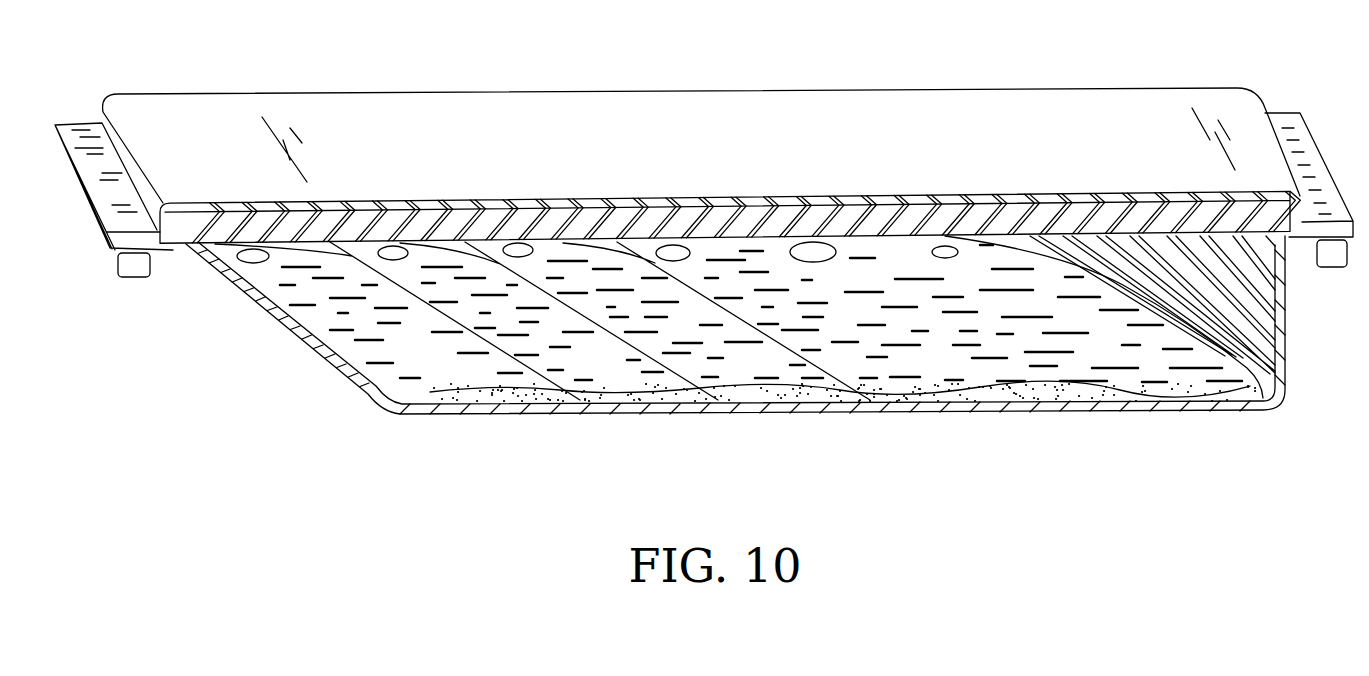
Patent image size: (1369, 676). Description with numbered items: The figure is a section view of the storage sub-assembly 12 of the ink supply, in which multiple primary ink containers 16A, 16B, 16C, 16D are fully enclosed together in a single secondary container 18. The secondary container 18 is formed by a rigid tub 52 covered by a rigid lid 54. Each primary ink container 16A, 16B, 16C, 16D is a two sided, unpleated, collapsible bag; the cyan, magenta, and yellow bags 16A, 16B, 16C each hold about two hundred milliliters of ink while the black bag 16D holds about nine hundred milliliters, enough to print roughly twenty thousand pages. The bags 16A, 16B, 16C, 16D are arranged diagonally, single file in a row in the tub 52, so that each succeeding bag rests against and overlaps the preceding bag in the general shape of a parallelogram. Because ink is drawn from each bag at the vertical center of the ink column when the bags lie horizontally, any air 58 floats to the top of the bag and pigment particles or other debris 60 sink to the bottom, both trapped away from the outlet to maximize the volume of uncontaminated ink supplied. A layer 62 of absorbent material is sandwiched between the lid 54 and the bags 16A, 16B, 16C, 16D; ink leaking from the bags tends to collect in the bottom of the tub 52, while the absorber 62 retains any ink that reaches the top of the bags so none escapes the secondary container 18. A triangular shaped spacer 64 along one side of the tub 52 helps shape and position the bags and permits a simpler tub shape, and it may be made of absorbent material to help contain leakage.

The storage sub-assembly 12 is at (186, 298).
The primary ink container 16A is at (372, 385).
The primary ink container 16B is at (588, 393).
The primary ink container 16C is at (723, 393).
The primary ink container 16D is at (873, 393).
The secondary container 18 is at (103, 218).
The tub 52 is at (263, 317).
The lid 54 is at (223, 110).
The air 58 is at (518, 253).
The debris 60 is at (975, 390).
The layer of absorbent material 62 is at (1020, 222).
The spacer 64 is at (1262, 332).